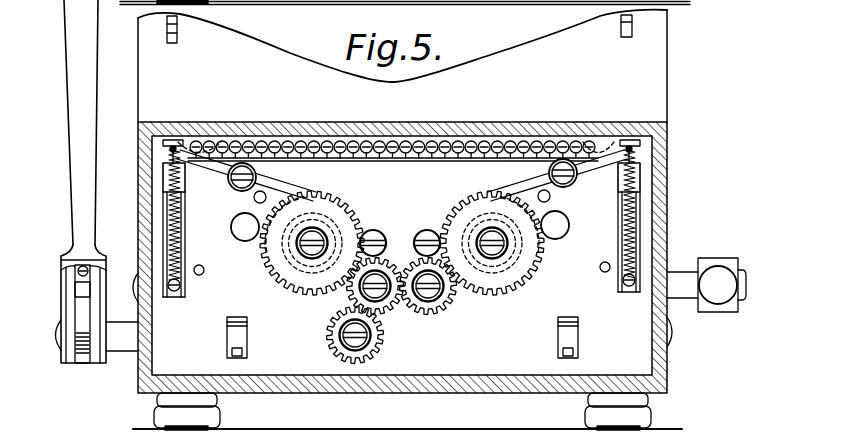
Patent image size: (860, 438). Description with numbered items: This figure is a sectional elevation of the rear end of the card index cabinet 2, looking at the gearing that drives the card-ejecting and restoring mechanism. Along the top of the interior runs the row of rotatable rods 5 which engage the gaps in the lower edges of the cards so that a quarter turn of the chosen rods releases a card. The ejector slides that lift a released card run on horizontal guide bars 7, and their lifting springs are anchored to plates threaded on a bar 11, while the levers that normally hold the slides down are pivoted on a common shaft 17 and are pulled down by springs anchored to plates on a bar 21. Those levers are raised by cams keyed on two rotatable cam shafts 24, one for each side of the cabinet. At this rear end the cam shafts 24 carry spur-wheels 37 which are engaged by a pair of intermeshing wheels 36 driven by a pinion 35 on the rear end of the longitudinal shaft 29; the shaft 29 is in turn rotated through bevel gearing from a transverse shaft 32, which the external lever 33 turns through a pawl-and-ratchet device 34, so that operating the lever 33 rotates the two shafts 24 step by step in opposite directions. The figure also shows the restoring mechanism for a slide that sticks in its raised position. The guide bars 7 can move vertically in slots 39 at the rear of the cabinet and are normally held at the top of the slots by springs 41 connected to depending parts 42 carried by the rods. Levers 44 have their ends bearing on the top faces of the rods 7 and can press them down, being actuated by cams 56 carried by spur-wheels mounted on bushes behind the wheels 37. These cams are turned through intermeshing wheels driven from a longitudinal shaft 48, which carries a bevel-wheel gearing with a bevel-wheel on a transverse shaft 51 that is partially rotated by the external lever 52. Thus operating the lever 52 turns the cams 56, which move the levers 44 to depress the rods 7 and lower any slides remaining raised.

The cabinet 2 is at (670, 107).
The rotatable rods 5 is at (340, 142).
The guide bars 7 is at (163, 178).
The bar 11 is at (177, 33).
The shaft 17 is at (379, 236).
The bar 21 is at (228, 336).
The cam shaft 24 is at (297, 253).
The shaft 29 is at (345, 339).
The transverse shaft 32 is at (125, 338).
The lever 33 is at (69, 42).
The pawl-and-ratchet device 34 is at (88, 362).
The pinion 35 is at (333, 338).
The intermeshing wheels 36 is at (417, 306).
The spur-wheels 37 is at (340, 198).
The slots 39 is at (162, 205).
The springs 41 is at (167, 231).
The depending parts 42 is at (184, 280).
The levers 44 is at (184, 150).
The longitudinal shaft 48 is at (434, 300).
The transverse shaft 51 is at (686, 290).
The lever 52 is at (728, 266).
The cams 56 is at (240, 235).